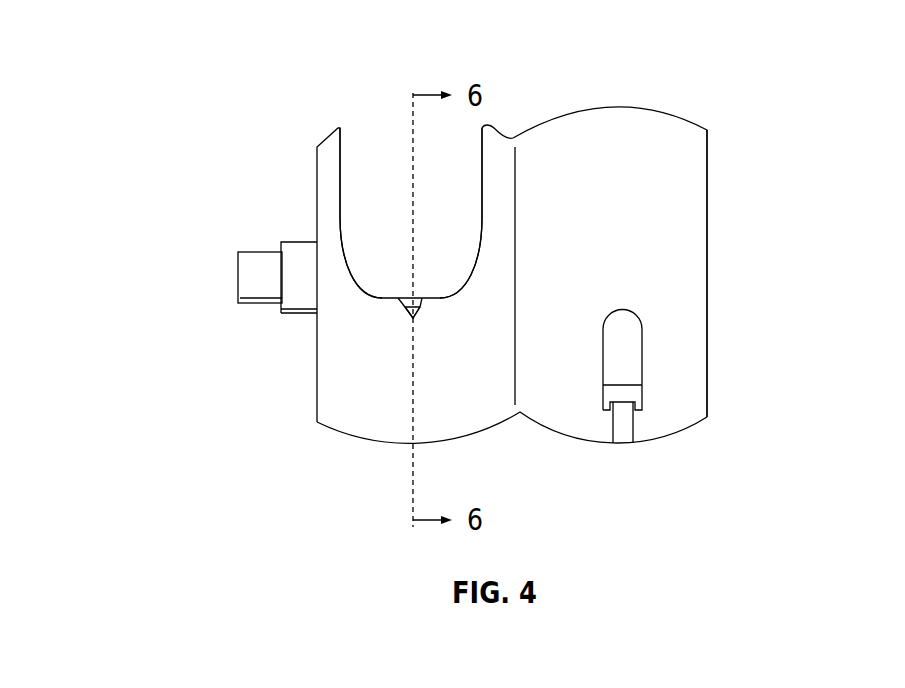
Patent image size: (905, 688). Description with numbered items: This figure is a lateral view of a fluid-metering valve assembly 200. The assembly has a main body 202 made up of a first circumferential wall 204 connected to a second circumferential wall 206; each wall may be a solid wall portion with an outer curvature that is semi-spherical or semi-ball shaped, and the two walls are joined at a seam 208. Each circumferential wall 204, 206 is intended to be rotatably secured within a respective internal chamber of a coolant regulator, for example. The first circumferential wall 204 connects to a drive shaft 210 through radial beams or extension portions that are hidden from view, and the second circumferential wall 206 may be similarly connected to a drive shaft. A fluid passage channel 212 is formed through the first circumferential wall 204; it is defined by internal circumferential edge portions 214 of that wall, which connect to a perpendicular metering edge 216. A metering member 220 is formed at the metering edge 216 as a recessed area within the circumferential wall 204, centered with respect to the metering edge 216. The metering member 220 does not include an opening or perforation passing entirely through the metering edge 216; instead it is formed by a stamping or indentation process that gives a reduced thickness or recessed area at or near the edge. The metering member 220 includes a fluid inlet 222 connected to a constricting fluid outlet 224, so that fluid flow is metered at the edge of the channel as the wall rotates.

The fluid-metering valve assembly 200 is at (222, 56).
The main body 202 is at (617, 102).
The first circumferential wall 204 is at (395, 443).
The second circumferential wall 206 is at (708, 213).
The seam 208 is at (513, 138).
The drive shaft 210 is at (258, 305).
The fluid passage channel 212 is at (375, 132).
The internal circumferential edge portions 214 is at (342, 217).
The metering edge 216 is at (397, 297).
The metering member 220 is at (428, 322).
The fluid inlet 222 is at (420, 293).
The constricting fluid outlet 224 is at (413, 320).